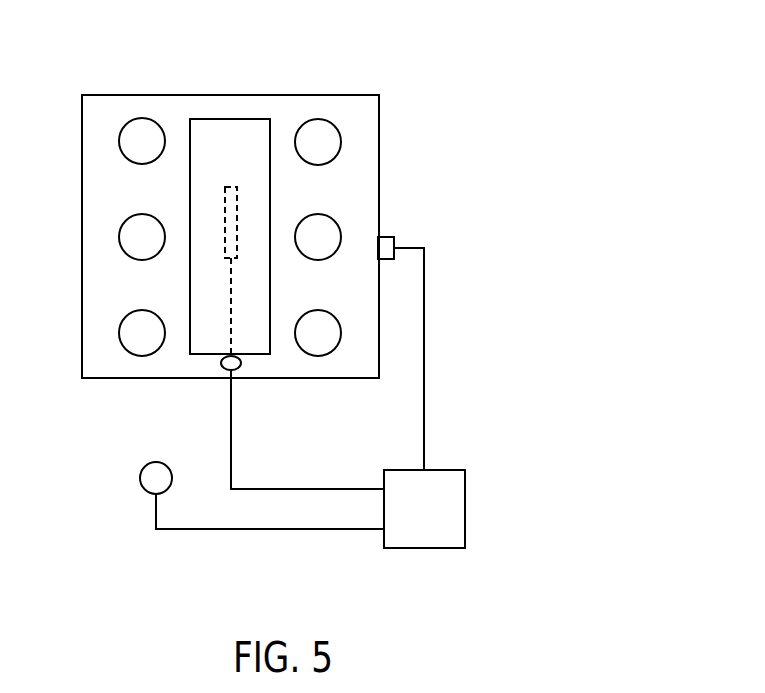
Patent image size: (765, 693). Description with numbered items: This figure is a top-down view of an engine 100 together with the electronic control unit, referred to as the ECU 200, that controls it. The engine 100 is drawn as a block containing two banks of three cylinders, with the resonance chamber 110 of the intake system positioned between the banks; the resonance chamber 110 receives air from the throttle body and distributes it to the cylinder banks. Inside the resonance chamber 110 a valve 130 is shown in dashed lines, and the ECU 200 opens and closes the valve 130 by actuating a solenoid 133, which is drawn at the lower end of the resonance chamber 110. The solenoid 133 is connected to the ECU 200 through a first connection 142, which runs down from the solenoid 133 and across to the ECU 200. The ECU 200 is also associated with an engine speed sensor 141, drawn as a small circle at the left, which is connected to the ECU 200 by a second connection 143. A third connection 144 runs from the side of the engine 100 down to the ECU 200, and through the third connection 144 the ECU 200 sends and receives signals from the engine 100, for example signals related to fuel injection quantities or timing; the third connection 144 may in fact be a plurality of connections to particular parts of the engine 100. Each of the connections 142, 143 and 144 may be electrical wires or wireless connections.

The engine 100 is at (379, 157).
The resonance chamber 110 is at (253, 119).
The valve 130 is at (222, 195).
The solenoid 133 is at (226, 371).
The engine speed sensor 141 is at (140, 478).
The first connection 142 is at (298, 487).
The second connection 143 is at (266, 530).
The third connection 144 is at (426, 362).
The electronic control unit 200 is at (425, 549).